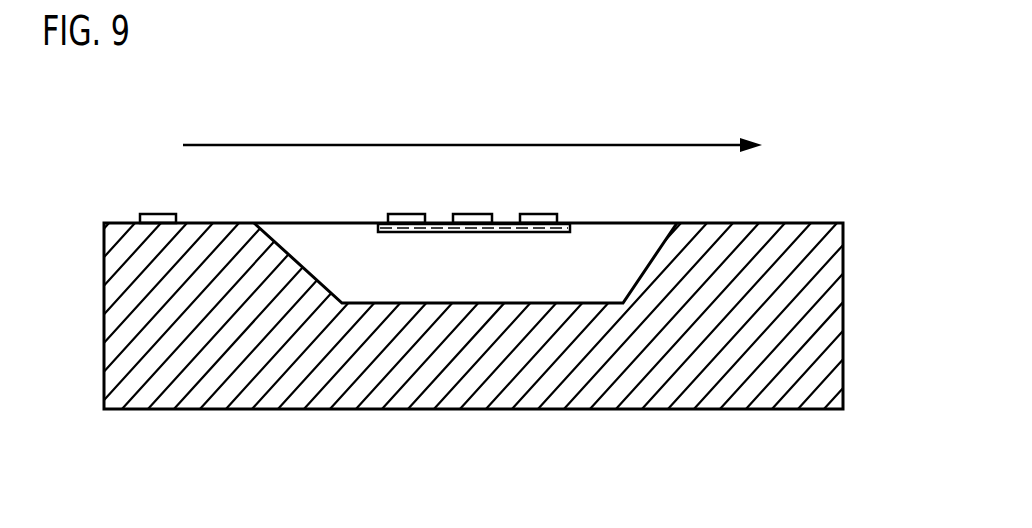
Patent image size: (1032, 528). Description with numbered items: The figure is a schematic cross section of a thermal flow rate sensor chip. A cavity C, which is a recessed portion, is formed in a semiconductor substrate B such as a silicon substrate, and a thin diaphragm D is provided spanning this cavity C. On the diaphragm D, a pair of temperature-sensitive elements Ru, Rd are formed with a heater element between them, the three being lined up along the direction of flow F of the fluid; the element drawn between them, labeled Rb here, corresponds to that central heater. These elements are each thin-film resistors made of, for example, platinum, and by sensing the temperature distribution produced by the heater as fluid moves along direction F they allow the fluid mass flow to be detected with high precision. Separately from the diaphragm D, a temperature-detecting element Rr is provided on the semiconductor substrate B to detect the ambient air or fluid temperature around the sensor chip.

The semiconductor substrate B is at (817, 320).
The cavity C is at (438, 273).
The diaphragm D is at (537, 232).
The temperature-detecting element Rr is at (157, 196).
The temperature-sensitive element Ru is at (407, 196).
The center (bridge) resistor Rb is at (472, 196).
The temperature-sensitive element Rd is at (538, 196).
The direction of flow F is at (490, 145).